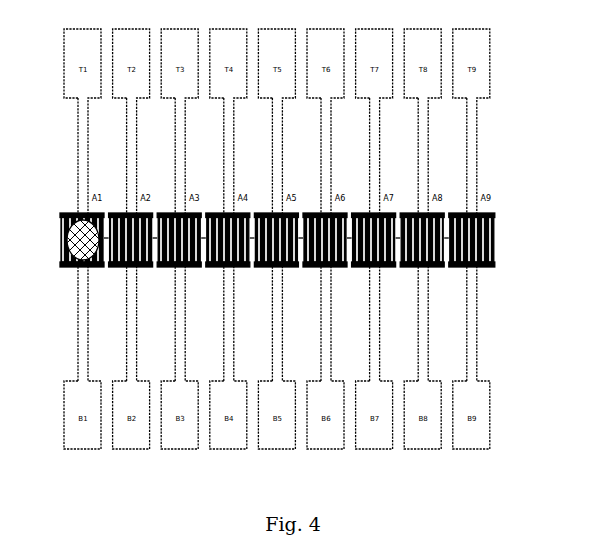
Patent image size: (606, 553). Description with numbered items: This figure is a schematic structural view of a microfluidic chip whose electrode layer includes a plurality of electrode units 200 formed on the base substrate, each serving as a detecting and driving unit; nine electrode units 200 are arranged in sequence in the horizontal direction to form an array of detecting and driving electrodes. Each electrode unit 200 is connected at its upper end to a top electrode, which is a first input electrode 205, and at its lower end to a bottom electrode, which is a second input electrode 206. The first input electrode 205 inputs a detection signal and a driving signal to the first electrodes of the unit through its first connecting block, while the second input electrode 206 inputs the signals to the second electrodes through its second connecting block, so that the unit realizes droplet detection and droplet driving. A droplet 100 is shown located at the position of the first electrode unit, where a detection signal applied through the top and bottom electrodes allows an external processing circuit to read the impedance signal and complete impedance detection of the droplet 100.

The droplet 100 is at (73, 218).
The electrode unit 200 is at (478, 263).
The first input electrode 205 is at (477, 85).
The second input electrode 206 is at (78, 392).